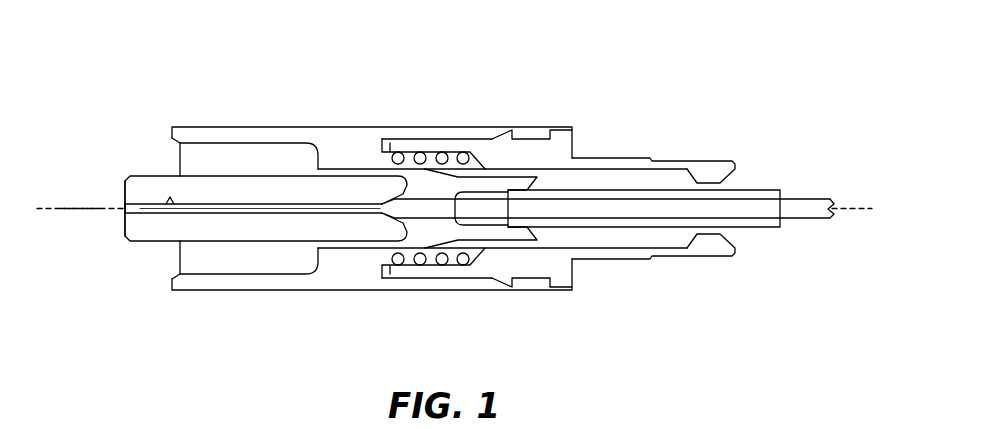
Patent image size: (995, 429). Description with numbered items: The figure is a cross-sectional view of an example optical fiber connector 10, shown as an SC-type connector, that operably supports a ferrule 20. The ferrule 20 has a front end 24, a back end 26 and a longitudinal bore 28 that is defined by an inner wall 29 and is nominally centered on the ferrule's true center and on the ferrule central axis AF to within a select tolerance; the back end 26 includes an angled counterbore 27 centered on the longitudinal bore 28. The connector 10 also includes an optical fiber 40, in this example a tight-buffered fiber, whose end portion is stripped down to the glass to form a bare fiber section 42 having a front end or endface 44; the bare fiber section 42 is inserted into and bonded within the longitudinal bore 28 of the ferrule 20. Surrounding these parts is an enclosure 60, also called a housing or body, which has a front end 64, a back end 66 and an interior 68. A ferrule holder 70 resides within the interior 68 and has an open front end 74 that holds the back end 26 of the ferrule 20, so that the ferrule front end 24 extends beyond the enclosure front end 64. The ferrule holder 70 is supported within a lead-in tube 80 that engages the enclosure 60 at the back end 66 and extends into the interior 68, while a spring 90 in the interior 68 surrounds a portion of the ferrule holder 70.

The optical fiber connector 10 is at (186, 66).
The ferrule 20 is at (157, 174).
The front end 24 is at (124, 188).
The back end 26 is at (405, 220).
The angled counterbore 27 is at (415, 222).
The longitudinal bore 28 is at (237, 210).
The inner wall 29 is at (170, 205).
The optical fiber 40 is at (137, 243).
The bare fiber section 42 is at (283, 210).
The front end 44 is at (123, 207).
The enclosure 60 is at (342, 127).
The front end 64 is at (170, 128).
The back end 66 is at (572, 127).
The interior 68 is at (227, 157).
The ferrule holder 70 is at (390, 150).
The open front end 74 is at (345, 171).
The lead-in tube 80 is at (528, 150).
The spring 90 is at (443, 155).
The ferrule central axis AF is at (77, 211).